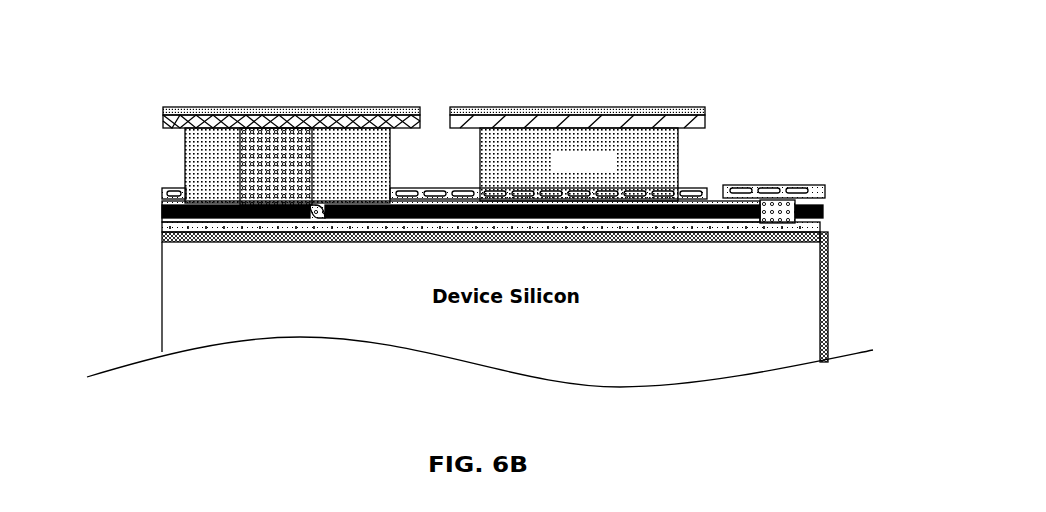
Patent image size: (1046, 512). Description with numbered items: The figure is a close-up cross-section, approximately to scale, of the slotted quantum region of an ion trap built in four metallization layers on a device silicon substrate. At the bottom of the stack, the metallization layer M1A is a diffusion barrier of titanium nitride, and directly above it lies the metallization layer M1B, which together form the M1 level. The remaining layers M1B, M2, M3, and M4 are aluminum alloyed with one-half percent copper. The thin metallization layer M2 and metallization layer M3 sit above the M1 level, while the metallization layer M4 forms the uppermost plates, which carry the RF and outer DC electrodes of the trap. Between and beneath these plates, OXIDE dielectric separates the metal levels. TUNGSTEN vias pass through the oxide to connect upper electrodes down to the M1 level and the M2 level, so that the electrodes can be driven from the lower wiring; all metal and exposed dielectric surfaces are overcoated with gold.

The metallization layer M4 is at (290, 107).
The tungsten via TUNGSTEN is at (313, 168).
The oxide dielectric OXIDE is at (197, 147).
The metallization layer M2 is at (162, 193).
The metallization layer M3 is at (693, 193).
The metallization layer M1B is at (162, 225).
The metallization layer M1A is at (162, 237).
The M1 level M1 is at (825, 212).